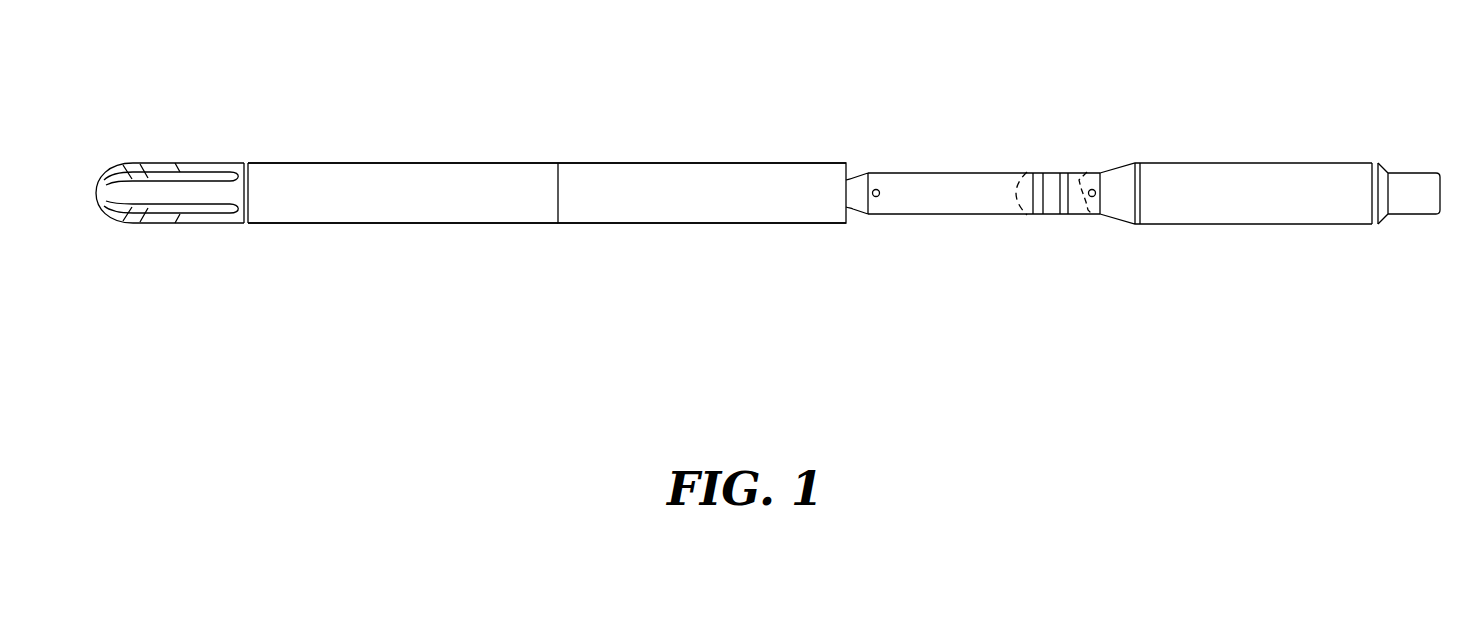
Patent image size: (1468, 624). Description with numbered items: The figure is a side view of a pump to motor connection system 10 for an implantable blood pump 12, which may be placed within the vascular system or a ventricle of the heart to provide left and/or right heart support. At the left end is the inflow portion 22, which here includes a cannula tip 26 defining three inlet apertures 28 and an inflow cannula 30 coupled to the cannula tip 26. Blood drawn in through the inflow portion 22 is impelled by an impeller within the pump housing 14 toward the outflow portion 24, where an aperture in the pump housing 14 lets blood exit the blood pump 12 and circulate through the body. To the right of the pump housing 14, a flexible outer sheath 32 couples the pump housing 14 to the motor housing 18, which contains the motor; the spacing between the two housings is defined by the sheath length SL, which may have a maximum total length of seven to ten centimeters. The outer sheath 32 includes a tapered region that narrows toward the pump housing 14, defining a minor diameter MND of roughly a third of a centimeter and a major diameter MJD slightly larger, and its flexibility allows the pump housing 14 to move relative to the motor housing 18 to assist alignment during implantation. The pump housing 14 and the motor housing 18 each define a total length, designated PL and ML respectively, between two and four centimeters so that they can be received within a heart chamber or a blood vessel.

The pump to motor connection system 10 is at (930, 155).
The implantable blood pump 12 is at (688, 155).
The pump housing 14 is at (612, 162).
The motor housing 18 is at (1223, 162).
The inflow portion 22 is at (140, 152).
The outflow portion 24 is at (851, 172).
The cannula tip 26 is at (192, 166).
The inlet apertures 28 is at (163, 210).
The inflow cannula 30 is at (287, 163).
The flexible outer sheath 32 is at (972, 172).
The major diameter MJD is at (1015, 193).
The minor diameter MND is at (1079, 180).
The pump housing total length PL is at (845, 331).
The outer sheath length SL is at (848, 331).
The motor housing total length ML is at (1103, 331).